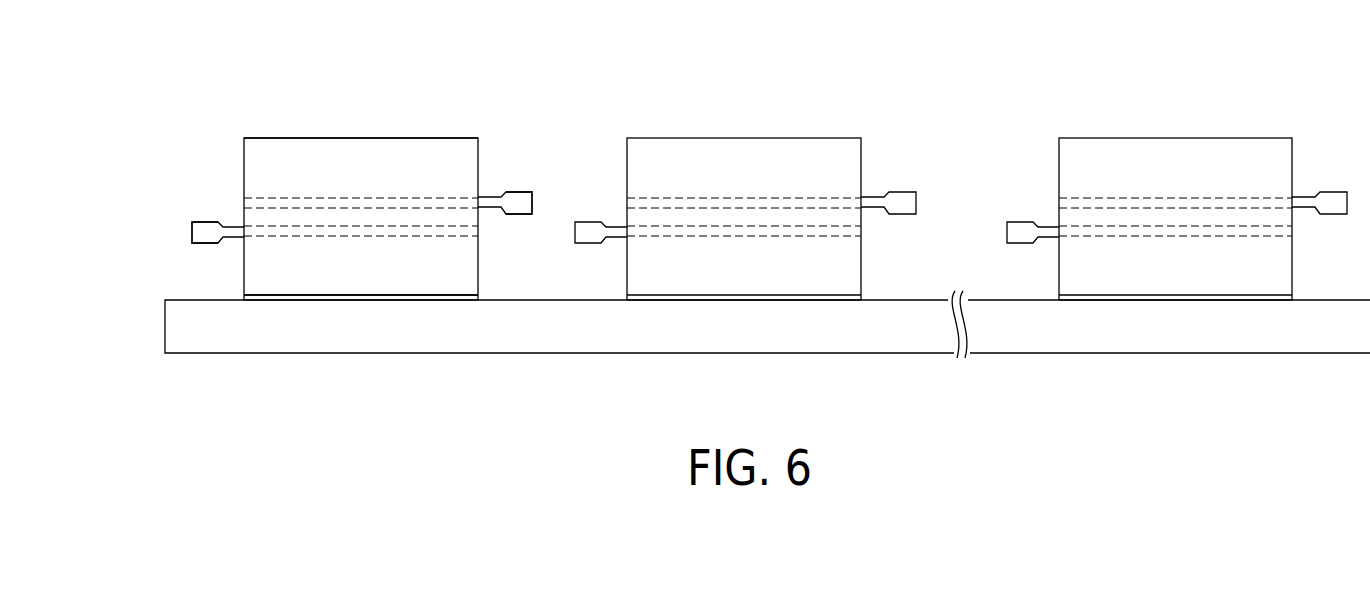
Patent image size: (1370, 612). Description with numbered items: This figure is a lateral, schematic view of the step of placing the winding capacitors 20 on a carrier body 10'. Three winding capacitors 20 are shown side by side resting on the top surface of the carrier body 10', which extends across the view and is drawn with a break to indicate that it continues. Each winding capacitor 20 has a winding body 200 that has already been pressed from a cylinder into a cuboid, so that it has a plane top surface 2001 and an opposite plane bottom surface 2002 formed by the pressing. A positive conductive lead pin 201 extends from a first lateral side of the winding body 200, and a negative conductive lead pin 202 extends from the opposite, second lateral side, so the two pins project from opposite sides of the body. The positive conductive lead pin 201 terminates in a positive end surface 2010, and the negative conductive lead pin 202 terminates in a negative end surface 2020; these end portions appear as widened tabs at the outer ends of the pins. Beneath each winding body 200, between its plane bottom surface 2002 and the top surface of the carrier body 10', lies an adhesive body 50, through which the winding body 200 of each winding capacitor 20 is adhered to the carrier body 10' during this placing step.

The carrier body 10' is at (767, 289).
The winding capacitor 20 is at (454, 129).
The winding body 200 is at (323, 153).
The plane top surface 2001 is at (417, 138).
The plane bottom surface 2002 is at (454, 294).
The positive conductive lead pin 201 is at (208, 221).
The positive end surface 2010 is at (193, 232).
The negative conductive lead pin 202 is at (512, 193).
The negative end surface 2020 is at (532, 203).
The adhesive body 50 is at (370, 299).